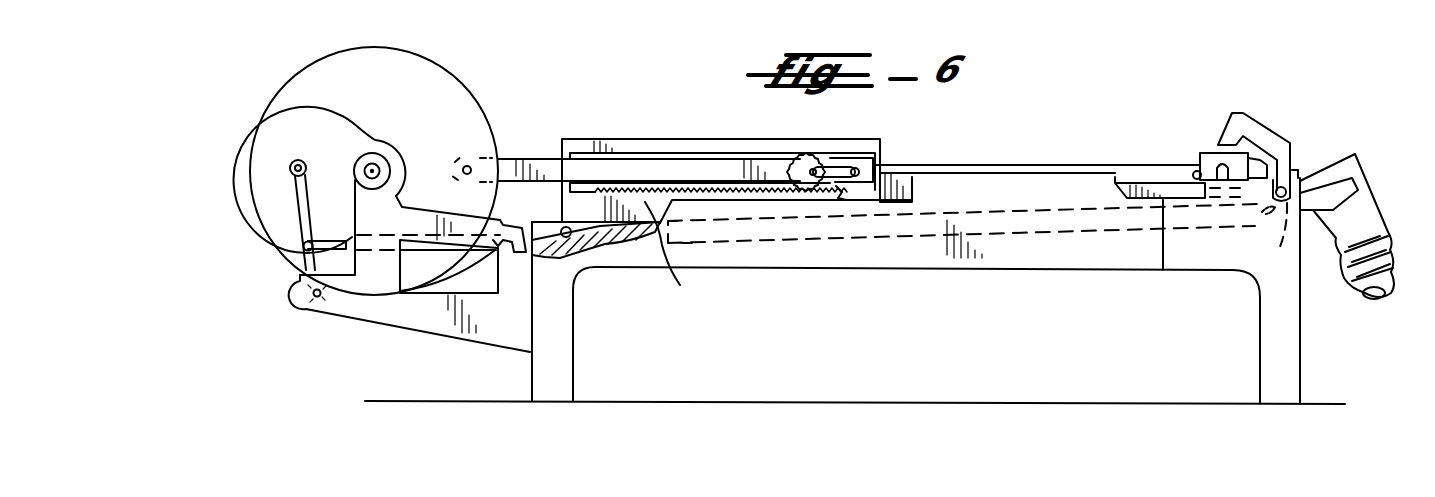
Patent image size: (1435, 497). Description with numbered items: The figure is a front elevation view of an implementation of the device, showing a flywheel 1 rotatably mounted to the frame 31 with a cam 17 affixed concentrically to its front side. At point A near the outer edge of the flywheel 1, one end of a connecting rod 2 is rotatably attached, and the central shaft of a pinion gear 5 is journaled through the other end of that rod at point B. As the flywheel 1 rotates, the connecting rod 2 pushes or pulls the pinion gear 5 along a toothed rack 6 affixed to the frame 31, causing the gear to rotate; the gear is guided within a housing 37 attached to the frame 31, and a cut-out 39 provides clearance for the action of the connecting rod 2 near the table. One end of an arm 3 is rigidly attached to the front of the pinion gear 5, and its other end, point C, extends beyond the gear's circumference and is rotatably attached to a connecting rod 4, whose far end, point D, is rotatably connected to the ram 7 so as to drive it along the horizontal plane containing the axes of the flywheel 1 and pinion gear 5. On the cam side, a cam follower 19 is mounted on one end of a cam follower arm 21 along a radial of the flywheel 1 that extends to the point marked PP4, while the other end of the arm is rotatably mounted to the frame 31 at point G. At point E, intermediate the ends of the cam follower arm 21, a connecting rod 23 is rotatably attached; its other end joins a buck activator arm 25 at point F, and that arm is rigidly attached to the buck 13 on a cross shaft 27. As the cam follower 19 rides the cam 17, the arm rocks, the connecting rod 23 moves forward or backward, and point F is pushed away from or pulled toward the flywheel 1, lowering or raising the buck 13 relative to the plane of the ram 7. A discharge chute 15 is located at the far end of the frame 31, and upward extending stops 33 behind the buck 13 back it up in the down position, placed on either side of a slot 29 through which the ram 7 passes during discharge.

The flywheel 1 is at (330, 62).
The cam 17 is at (345, 128).
The cam follower 19 is at (292, 163).
The cam follower arm 21 is at (296, 207).
The connecting rod 23 is at (345, 248).
The connecting rod 2 is at (623, 170).
The housing 37 is at (672, 139).
The pinion gear 5 is at (800, 165).
The arm 3 is at (845, 167).
The connecting rod 4 is at (950, 167).
The cut-out 39 is at (582, 248).
The toothed rack 6 is at (672, 253).
The frame 31 is at (768, 260).
The slot 29 is at (1130, 183).
The ram 7 is at (1212, 158).
The buck 13 is at (1242, 118).
The cross shaft 27 is at (1284, 186).
The discharge chute 15 is at (1352, 162).
The stops 33 is at (1230, 178).
The buck activator arm 25 is at (1284, 238).
The pivot point PP4 is at (470, 165).
The point A is at (463, 173).
The point B is at (814, 168).
The point C is at (860, 170).
The point D is at (1194, 172).
The point E is at (302, 250).
The point F is at (1272, 212).
The point G is at (308, 300).